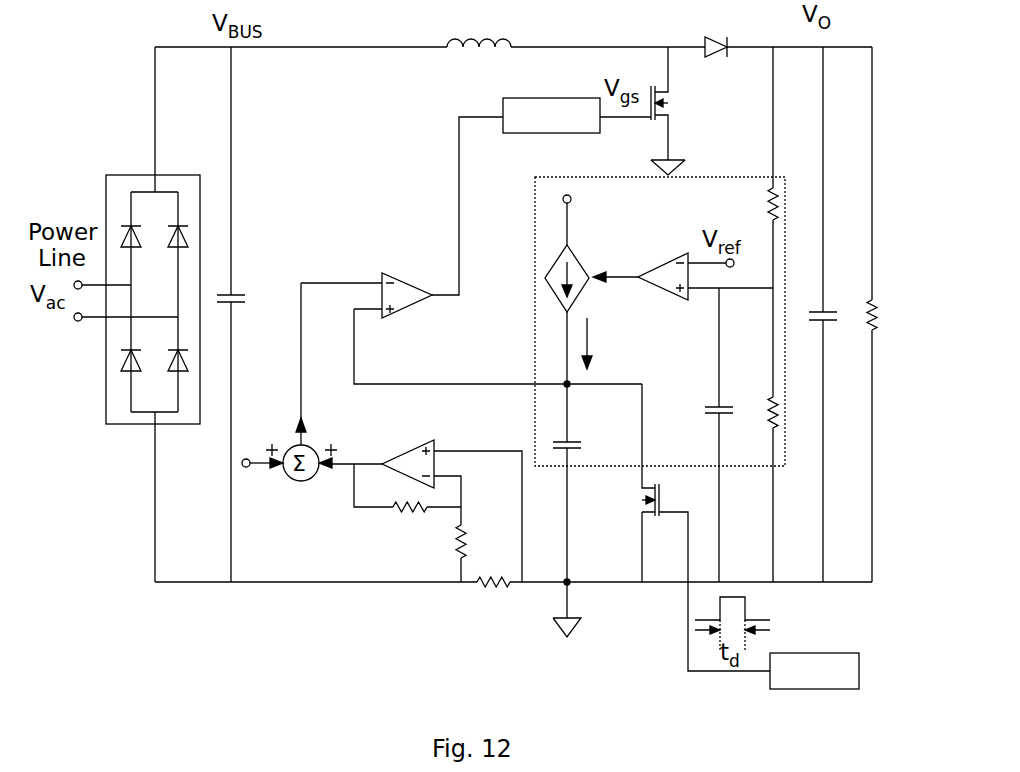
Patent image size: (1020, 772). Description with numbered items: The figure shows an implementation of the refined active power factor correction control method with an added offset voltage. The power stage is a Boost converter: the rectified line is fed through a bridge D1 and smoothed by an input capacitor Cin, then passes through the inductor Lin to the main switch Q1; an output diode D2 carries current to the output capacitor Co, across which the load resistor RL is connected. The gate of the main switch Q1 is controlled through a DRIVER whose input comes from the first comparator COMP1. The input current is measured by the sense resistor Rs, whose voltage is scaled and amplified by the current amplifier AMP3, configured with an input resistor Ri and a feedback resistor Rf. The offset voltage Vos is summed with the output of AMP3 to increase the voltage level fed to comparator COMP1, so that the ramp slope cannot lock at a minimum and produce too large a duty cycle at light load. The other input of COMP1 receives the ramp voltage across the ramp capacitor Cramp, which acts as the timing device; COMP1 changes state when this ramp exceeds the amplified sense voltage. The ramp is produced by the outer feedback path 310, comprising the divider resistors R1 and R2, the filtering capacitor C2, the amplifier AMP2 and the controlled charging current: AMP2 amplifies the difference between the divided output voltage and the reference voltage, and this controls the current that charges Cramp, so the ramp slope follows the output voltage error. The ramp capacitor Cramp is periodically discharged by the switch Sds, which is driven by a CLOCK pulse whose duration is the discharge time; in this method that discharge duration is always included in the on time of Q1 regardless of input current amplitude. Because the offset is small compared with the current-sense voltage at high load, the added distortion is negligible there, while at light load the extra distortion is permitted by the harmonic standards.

The outer feedback path 310 is at (535, 292).
The bridge rectifier D1 is at (153, 314).
The output (main) diode D2 is at (715, 29).
The main switch Q1 is at (655, 111).
The input capacitor Cin is at (244, 314).
The inductor Lin is at (479, 26).
The driver DRIVER is at (516, 196).
The first comparator COMP1 is at (471, 312).
The amplifier AMP2 is at (683, 292).
The current amplifier AMP3 is at (379, 451).
The offset voltage Vos is at (260, 485).
The feedback resistor Rf is at (410, 526).
The input resistor Ri is at (473, 543).
The sense resistor Rs is at (493, 600).
The ramp capacitor Cramp is at (593, 483).
The capacitor C2 is at (703, 435).
The resistor R1 is at (753, 167).
The resistor R2 is at (755, 435).
The output capacitor Co is at (812, 314).
The load resistor RL is at (858, 298).
The discharge switch Sds is at (671, 483).
The clock CLOCK is at (814, 671).